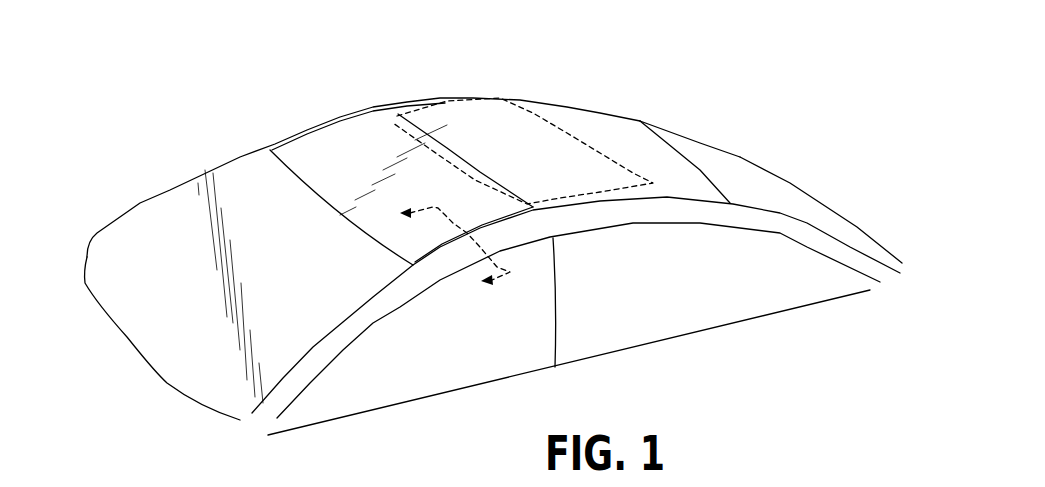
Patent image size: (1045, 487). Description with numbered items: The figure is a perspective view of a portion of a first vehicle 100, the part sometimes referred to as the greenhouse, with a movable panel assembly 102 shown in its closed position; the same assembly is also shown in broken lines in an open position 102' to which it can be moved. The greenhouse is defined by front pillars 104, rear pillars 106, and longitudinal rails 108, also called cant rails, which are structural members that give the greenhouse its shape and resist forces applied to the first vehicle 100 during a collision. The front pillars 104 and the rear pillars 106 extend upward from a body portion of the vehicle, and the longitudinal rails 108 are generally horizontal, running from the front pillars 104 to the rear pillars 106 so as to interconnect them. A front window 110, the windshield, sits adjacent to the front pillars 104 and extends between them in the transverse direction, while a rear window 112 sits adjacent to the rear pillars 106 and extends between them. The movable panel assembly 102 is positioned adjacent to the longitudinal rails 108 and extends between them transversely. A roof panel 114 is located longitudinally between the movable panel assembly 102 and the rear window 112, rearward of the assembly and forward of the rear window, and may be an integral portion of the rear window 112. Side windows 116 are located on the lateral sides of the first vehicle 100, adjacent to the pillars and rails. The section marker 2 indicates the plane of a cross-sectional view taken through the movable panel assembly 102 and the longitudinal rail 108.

The first vehicle 100 is at (128, 124).
The movable panel assembly 102 is at (386, 168).
The open position 102' is at (523, 121).
The front pillars 104 is at (167, 192).
The rear pillars 106 is at (713, 147).
The longitudinal rails 108 is at (563, 108).
The front window 110 is at (157, 342).
The rear window 112 is at (763, 193).
The roof panel 114 is at (620, 127).
The side windows 116 is at (413, 382).
The section line 2- 2 is at (446, 249).